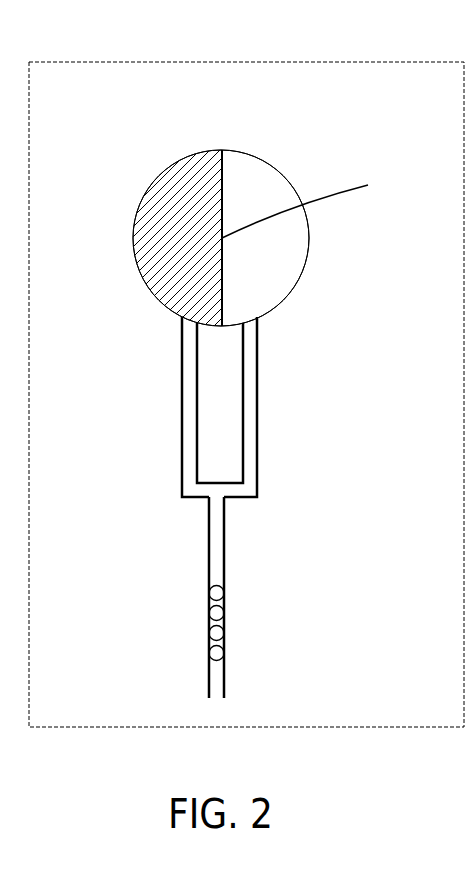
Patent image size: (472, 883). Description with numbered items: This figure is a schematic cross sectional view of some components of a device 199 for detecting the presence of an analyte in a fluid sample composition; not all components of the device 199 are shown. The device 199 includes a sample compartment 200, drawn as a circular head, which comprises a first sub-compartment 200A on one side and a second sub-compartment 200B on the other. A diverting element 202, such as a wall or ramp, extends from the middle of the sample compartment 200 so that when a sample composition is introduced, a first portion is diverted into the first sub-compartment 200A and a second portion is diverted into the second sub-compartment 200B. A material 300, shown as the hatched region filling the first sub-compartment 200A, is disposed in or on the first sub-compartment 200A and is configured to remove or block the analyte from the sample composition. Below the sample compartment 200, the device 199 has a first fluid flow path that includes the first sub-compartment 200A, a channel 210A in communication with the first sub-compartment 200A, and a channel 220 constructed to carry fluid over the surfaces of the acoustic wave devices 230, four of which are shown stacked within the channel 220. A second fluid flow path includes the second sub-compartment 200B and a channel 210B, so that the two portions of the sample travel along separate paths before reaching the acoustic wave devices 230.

The device 199 is at (324, 58).
The sample compartment 200 is at (280, 145).
The first sub-compartment 200A is at (132, 237).
The second sub-compartment 200B is at (308, 238).
The diverting element 202 is at (320, 208).
The channel 210A is at (182, 372).
The channel 210B is at (257, 393).
The channel 220 is at (225, 545).
The acoustic wave devices 230 is at (196, 623).
The material 300 is at (176, 205).